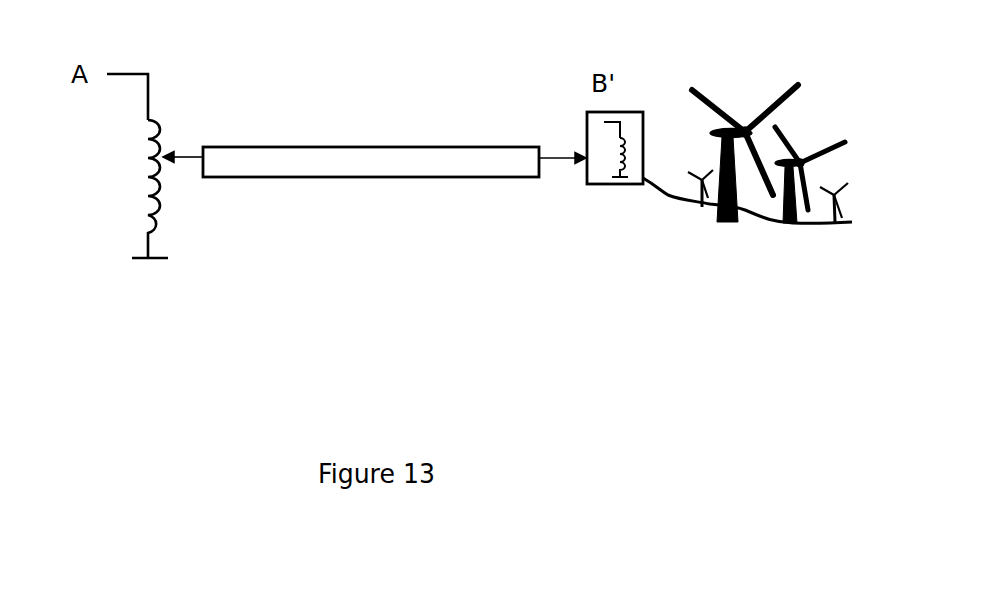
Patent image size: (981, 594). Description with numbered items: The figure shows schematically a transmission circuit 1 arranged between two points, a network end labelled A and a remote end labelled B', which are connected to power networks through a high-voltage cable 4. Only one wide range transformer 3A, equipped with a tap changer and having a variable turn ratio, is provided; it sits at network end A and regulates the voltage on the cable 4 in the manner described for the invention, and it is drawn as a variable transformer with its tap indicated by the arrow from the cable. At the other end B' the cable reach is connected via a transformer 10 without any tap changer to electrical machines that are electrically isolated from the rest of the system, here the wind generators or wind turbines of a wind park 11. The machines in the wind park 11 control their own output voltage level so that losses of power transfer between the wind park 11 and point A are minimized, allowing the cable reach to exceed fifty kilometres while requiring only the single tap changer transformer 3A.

The transmission circuit 1 is at (197, 224).
The wide range transformer 3A is at (165, 175).
The cable 4 is at (340, 178).
The transformer 10 is at (590, 197).
The wind park 11 is at (710, 235).